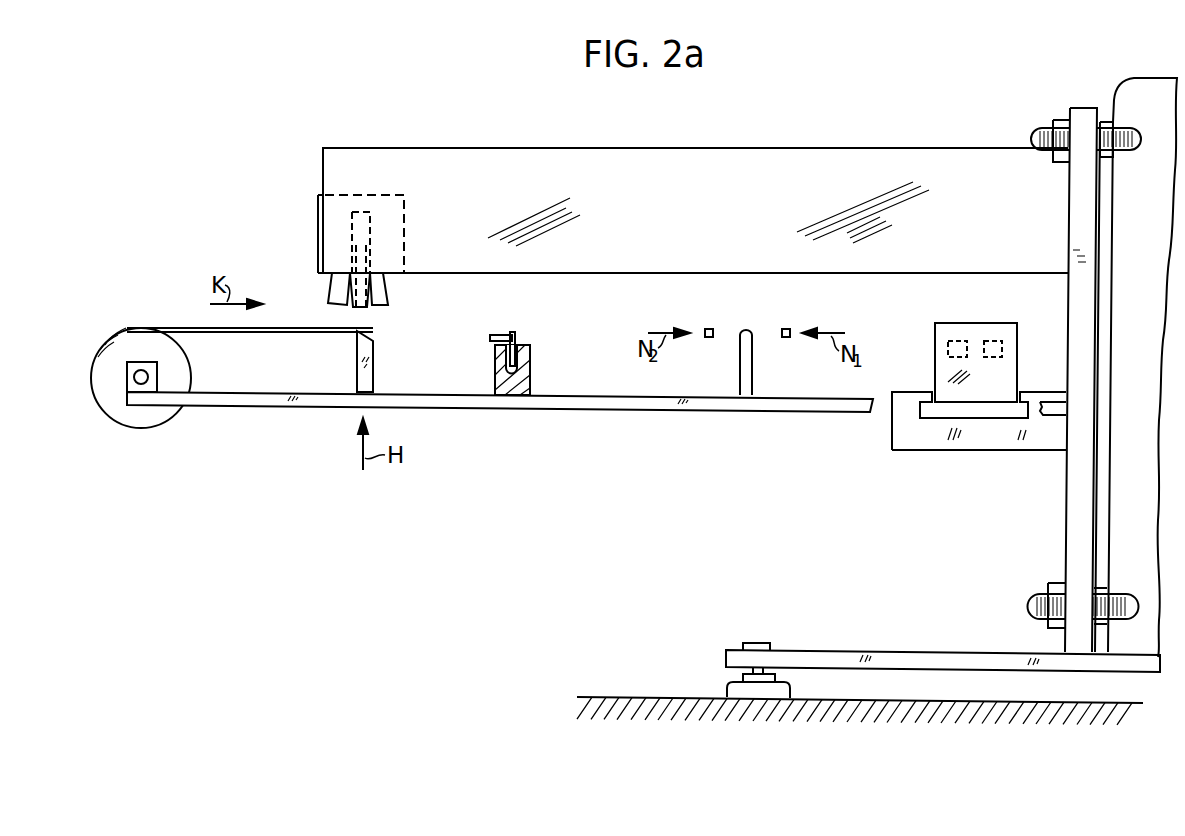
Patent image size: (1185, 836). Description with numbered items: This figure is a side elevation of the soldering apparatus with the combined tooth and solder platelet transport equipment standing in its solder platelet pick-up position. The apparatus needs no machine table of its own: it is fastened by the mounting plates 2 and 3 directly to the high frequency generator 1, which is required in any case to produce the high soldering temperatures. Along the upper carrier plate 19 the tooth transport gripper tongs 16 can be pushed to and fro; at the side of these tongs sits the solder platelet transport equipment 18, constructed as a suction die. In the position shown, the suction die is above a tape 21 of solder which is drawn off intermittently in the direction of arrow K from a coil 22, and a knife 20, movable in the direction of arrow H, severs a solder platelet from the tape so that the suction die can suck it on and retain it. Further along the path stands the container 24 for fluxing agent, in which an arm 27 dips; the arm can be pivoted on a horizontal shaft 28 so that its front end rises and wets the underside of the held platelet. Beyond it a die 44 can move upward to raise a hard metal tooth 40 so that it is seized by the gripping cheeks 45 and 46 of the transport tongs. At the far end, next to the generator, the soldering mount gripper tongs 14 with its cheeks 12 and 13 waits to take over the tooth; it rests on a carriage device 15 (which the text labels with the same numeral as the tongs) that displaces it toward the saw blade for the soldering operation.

The high frequency generator 1 is at (1143, 206).
The mounting plate 2 is at (1073, 535).
The mounting plate 3 is at (924, 660).
The cheek 12 is at (1002, 348).
The cheek 13 is at (948, 348).
The gripper tongs 14 is at (1004, 395).
The support bracket 15 is at (919, 445).
The tooth transport gripper tongs 16 is at (318, 236).
The solder platelet transport equipment 18 is at (362, 239).
The carrier plate 19 is at (366, 185).
The knife 20 is at (370, 373).
The tape 21 is at (258, 332).
The coil 22 is at (186, 375).
The container 24 is at (531, 379).
The arm 27 is at (498, 361).
The horizontal shaft 28 is at (498, 334).
The hard metal tooth 40 is at (709, 338).
The die 44 is at (746, 392).
The gripping cheek 45 is at (338, 288).
The gripping cheek 46 is at (388, 292).